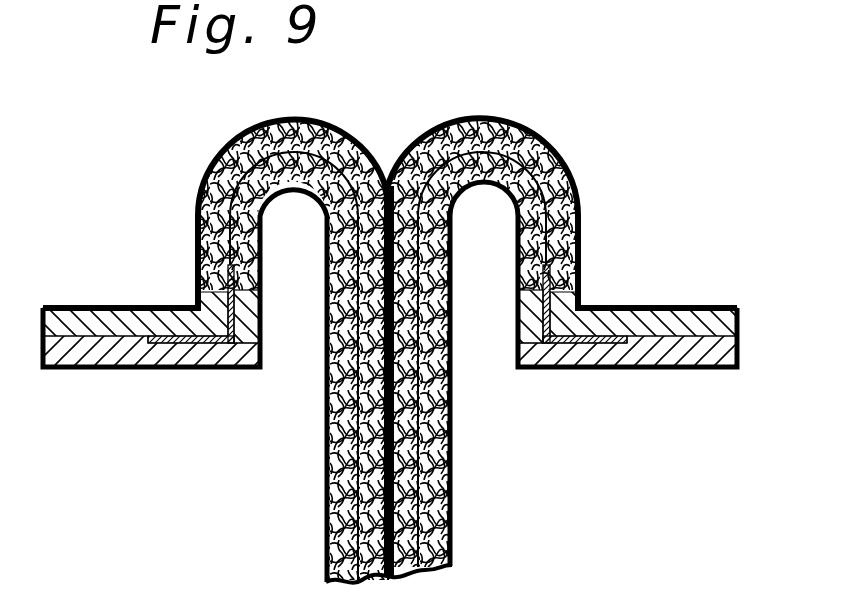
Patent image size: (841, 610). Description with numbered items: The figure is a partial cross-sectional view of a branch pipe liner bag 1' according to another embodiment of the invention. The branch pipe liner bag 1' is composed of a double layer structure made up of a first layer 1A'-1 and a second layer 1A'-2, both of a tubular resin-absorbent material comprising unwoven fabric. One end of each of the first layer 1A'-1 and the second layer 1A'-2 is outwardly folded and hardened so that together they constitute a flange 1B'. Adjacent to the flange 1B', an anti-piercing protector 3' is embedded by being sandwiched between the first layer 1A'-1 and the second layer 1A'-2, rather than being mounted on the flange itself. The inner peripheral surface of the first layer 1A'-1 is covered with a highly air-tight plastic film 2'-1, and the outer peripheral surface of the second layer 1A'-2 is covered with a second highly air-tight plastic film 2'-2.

The branch pipe liner bag 1' is at (390, 309).
The first layer 1A'-1 is at (388, 349).
The second layer 1A'-2 is at (390, 279).
The flange 1B' is at (390, 381).
The plastic film 2'-1 is at (363, 350).
The plastic film 2'-2 is at (480, 301).
The anti-piercing protector 3' is at (387, 343).